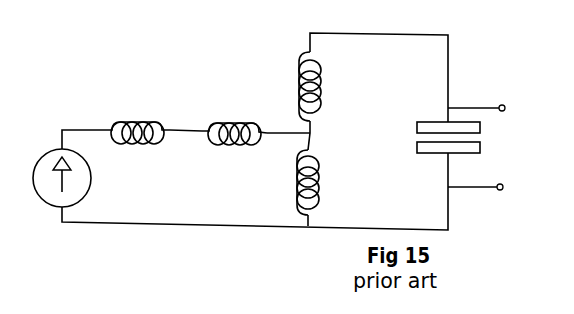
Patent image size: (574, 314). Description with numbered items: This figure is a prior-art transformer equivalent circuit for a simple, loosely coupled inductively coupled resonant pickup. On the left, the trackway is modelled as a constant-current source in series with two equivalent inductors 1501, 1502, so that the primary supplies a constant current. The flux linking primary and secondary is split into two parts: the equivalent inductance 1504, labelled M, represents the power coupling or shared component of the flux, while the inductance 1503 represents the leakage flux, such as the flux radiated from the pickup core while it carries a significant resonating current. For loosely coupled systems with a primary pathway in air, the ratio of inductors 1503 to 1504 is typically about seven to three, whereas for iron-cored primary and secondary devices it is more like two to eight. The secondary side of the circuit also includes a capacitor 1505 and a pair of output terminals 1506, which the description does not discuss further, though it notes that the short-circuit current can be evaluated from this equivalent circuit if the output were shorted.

The equivalent inductor 1501 is at (166, 120).
The equivalent inductor 1502 is at (270, 121).
The leakage flux inductance 1503 is at (322, 104).
The equivalent inductance (M) 1504 is at (320, 189).
The capacitor 1505 is at (431, 118).
The current source / output terminals 1506 is at (88, 202).